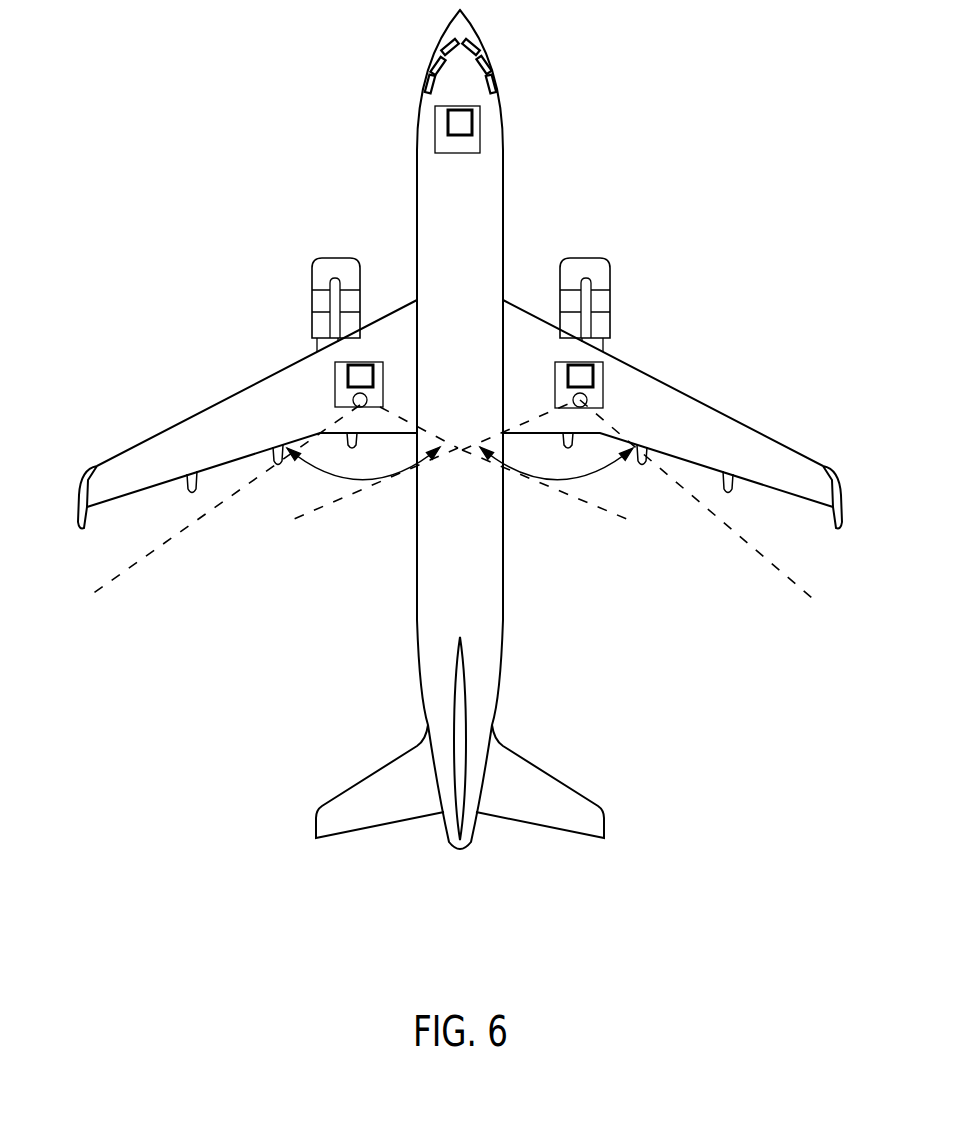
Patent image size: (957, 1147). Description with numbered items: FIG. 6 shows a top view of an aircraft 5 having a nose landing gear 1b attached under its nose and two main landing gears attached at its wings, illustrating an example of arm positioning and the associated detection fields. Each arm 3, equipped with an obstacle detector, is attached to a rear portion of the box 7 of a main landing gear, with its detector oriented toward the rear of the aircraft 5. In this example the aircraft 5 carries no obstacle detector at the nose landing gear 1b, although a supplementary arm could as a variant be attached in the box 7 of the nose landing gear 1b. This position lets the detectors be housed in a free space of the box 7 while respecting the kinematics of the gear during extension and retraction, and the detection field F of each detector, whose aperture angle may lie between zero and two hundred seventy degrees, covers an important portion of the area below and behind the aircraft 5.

The aircraft 5 is at (270, 110).
The nose landing gear 1b is at (475, 110).
The box 7 is at (477, 153).
The arm 3 is at (353, 402).
The detection field F is at (165, 580).